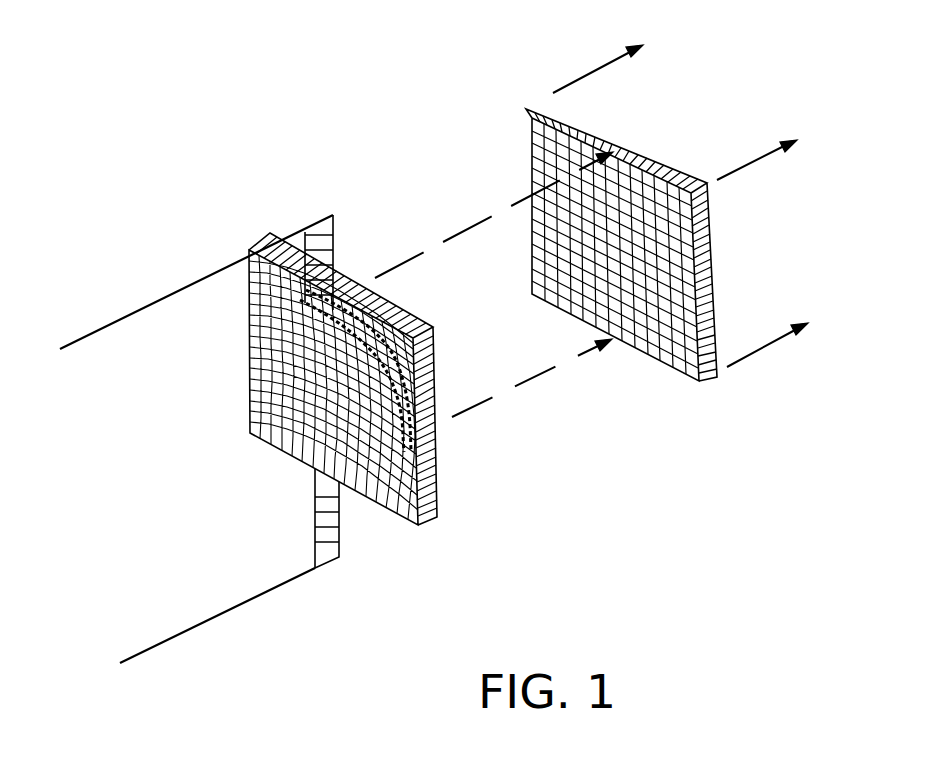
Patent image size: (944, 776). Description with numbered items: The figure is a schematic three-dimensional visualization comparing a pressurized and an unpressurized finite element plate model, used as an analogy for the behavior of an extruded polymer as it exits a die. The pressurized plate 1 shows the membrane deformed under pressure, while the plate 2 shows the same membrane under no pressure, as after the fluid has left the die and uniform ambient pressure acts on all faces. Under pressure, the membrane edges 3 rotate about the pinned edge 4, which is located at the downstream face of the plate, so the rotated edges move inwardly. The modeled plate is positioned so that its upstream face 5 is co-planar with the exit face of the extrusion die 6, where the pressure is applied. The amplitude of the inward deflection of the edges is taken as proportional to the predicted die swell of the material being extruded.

The pressurized plate 1 is at (235, 243).
The plate 2 is at (722, 253).
The membrane edges 3 is at (705, 385).
The pinned edge 4 is at (358, 379).
The upstream face 5 is at (287, 368).
The extrusion die 6 is at (345, 535).